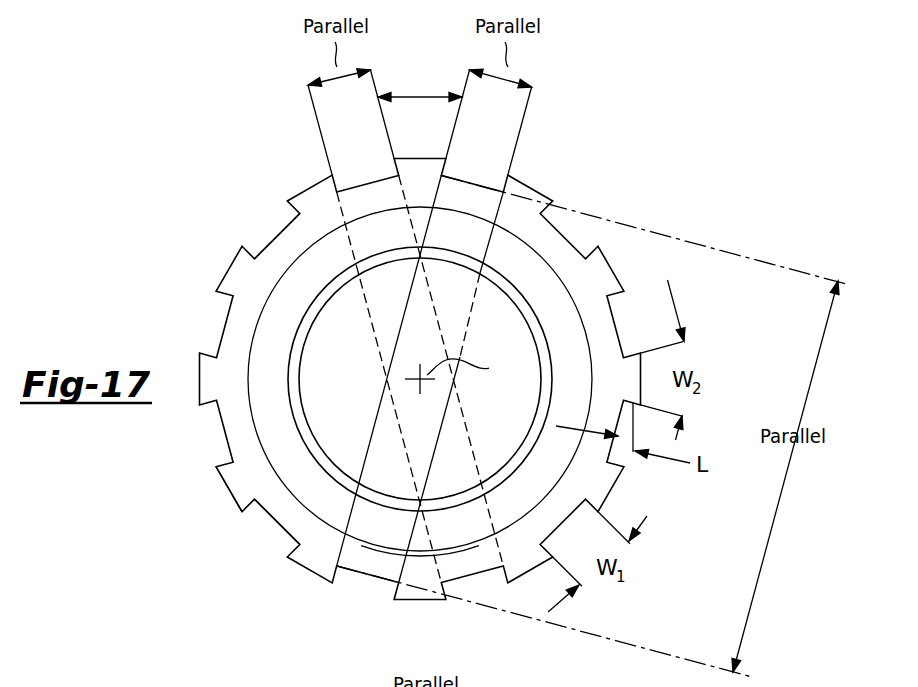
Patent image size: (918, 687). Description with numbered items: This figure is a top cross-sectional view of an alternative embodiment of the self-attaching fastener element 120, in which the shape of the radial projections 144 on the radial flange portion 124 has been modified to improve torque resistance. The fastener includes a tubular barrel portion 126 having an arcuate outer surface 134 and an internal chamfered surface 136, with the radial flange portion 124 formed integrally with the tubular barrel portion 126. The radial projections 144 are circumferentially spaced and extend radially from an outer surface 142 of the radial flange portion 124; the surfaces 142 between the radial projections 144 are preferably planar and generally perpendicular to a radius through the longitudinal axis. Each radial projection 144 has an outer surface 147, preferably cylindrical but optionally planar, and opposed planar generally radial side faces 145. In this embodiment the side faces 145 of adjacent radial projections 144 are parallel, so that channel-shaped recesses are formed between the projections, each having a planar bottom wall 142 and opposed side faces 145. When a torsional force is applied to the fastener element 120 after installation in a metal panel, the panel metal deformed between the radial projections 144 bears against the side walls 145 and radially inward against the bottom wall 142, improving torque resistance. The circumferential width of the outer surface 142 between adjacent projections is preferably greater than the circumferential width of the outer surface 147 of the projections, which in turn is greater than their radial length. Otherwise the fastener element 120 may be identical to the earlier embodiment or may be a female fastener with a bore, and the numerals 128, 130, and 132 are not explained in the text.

The self-attaching fastener element 120 is at (194, 170).
The radial flange portion 124 is at (268, 542).
The tubular barrel portion 126 is at (237, 422).
The inner circumference of ring 128 is at (370, 547).
The central bore 130 is at (536, 337).
The hub 132 is at (472, 378).
The arcuate outer surface 134 is at (262, 323).
The internal chamfered surface 136 is at (293, 375).
The outer surface 142 is at (279, 231).
The radial projections 144 is at (306, 189).
The side faces 145 is at (398, 174).
The outer surface 147 is at (226, 497).